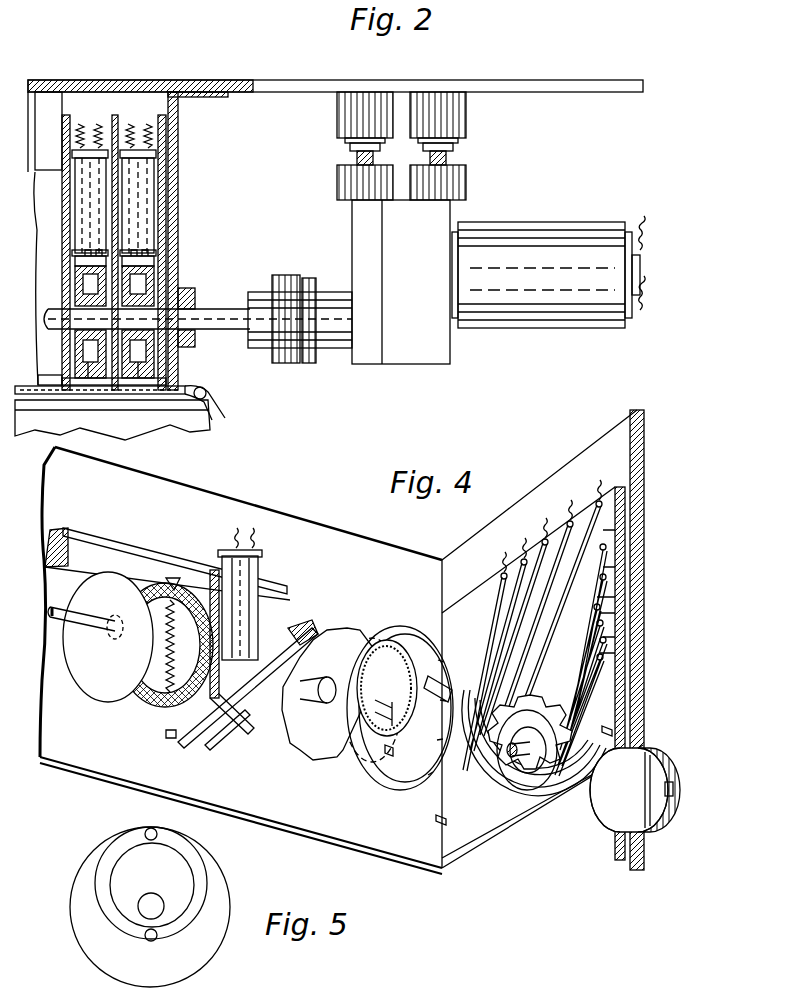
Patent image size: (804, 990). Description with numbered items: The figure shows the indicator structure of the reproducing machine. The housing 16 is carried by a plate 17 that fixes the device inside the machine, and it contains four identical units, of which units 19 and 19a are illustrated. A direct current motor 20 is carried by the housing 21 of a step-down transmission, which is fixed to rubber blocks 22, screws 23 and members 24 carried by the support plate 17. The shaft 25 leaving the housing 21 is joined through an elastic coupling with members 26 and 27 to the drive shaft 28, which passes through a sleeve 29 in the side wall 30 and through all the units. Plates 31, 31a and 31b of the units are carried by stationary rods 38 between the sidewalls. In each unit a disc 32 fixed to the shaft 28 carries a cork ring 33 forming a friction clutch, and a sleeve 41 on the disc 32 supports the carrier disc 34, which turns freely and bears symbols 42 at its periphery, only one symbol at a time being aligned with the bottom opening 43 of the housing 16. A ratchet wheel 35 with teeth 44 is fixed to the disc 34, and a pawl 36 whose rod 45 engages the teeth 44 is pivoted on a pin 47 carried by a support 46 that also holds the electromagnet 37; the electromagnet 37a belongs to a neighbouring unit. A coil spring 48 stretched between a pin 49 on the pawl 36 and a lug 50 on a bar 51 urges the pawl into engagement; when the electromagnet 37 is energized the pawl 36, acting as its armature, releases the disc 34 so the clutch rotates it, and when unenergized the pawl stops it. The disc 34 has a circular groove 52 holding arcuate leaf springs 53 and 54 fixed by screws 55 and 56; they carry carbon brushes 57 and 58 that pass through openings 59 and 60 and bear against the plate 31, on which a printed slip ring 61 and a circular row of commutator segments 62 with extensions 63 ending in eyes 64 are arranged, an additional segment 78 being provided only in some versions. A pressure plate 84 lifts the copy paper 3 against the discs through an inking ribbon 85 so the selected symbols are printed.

In FIG. 2, the copy paper 3 is at (206, 400).
In FIG. 2, the housing 16 is at (40, 106).
In FIG. 4, the housing 16 is at (348, 546).
In FIG. 2, the plate 17 is at (296, 82).
In FIG. 2, the unit 19 is at (150, 121).
In FIG. 2, the unit 19a is at (118, 121).
In FIG. 2, the direct current motor 20 is at (568, 248).
In FIG. 2, the housing of the step-down transmission 21 is at (440, 338).
In FIG. 2, the rubber blocks 22 is at (340, 184).
In FIG. 2, the screws 23 is at (360, 158).
In FIG. 2, the members 24 is at (340, 114).
In FIG. 2, the shaft 25 is at (330, 345).
In FIG. 2, the coupling member 26 is at (308, 282).
In FIG. 4, the coupling member 26 is at (652, 822).
In FIG. 2, the coupling member 27 is at (285, 352).
In FIG. 4, the coupling member 27 is at (616, 806).
In FIG. 2, the shaft 28 is at (222, 312).
In FIG. 4, the shaft 28 is at (528, 756).
In FIG. 2, the sleeve 29 is at (190, 292).
In FIG. 2, the side wall 30 is at (178, 118).
In FIG. 4, the side wall 30 is at (622, 442).
In FIG. 2, the plate 31 is at (162, 150).
In FIG. 4, the plate 31 is at (440, 856).
In FIG. 2, the plate 31a is at (115, 150).
In FIG. 2, the plate 31b is at (68, 150).
In FIG. 2, the disc 32 is at (122, 365).
In FIG. 4, the disc 32 is at (70, 662).
In FIG. 2, the ring 33 is at (132, 362).
In FIG. 4, the ring 33 is at (175, 702).
In FIG. 2, the disc 34 is at (145, 367).
In FIG. 4, the disc 34 is at (345, 770).
In FIG. 5, the disc 34 is at (213, 937).
In FIG. 2, the ratchet wheel 35 is at (142, 362).
In FIG. 4, the ratchet wheel 35 is at (335, 650).
In FIG. 4, the pawl 36 is at (214, 716).
In FIG. 2, the electromagnet 37 is at (140, 175).
In FIG. 4, the electromagnet 37 is at (242, 585).
In FIG. 2, the electromagnet 37a is at (92, 197).
In FIG. 4, the stationary rods 38 is at (437, 818).
In FIG. 4, the sleeve 41 is at (115, 650).
In FIG. 4, the symbols 42 is at (410, 765).
In FIG. 2, the bottom opening 43 is at (55, 386).
In FIG. 4, the teeth 44 is at (310, 752).
In FIG. 2, the rod 45 is at (130, 256).
In FIG. 4, the rod 45 is at (303, 634).
In FIG. 4, the support 46 is at (197, 600).
In FIG. 4, the pivot pin 47 is at (200, 738).
In FIG. 4, the coil spring 48 is at (168, 612).
In FIG. 4, the pin 49 is at (166, 733).
In FIG. 4, the lug 50 is at (173, 578).
In FIG. 2, the bar 51 is at (48, 158).
In FIG. 4, the bar 51 is at (85, 540).
In FIG. 4, the circular groove 52 is at (415, 662).
In FIG. 5, the circular groove 52 is at (200, 892).
In FIG. 4, the leaf spring 53 is at (410, 712).
In FIG. 4, the leaf spring 54 is at (383, 650).
In FIG. 4, the screw 55 is at (436, 690).
In FIG. 4, the screw 56 is at (345, 714).
In FIG. 2, the brush 57 is at (150, 350).
In FIG. 4, the brush 57 is at (355, 766).
In FIG. 2, the brush 58 is at (157, 256).
In FIG. 4, the brush 58 is at (405, 645).
In FIG. 5, the opening 59 is at (152, 942).
In FIG. 5, the opening 60 is at (145, 832).
In FIG. 4, the slip ring 61 is at (546, 770).
In FIG. 4, the commutator segments 62 is at (512, 800).
In FIG. 4, the extension 63 is at (490, 806).
In FIG. 4, the eyes 64 is at (527, 548).
In FIG. 4, the commutator segment 78 is at (568, 772).
In FIG. 2, the pressure plate 84 is at (25, 402).
In FIG. 2, the inking ribbon 85 is at (215, 403).